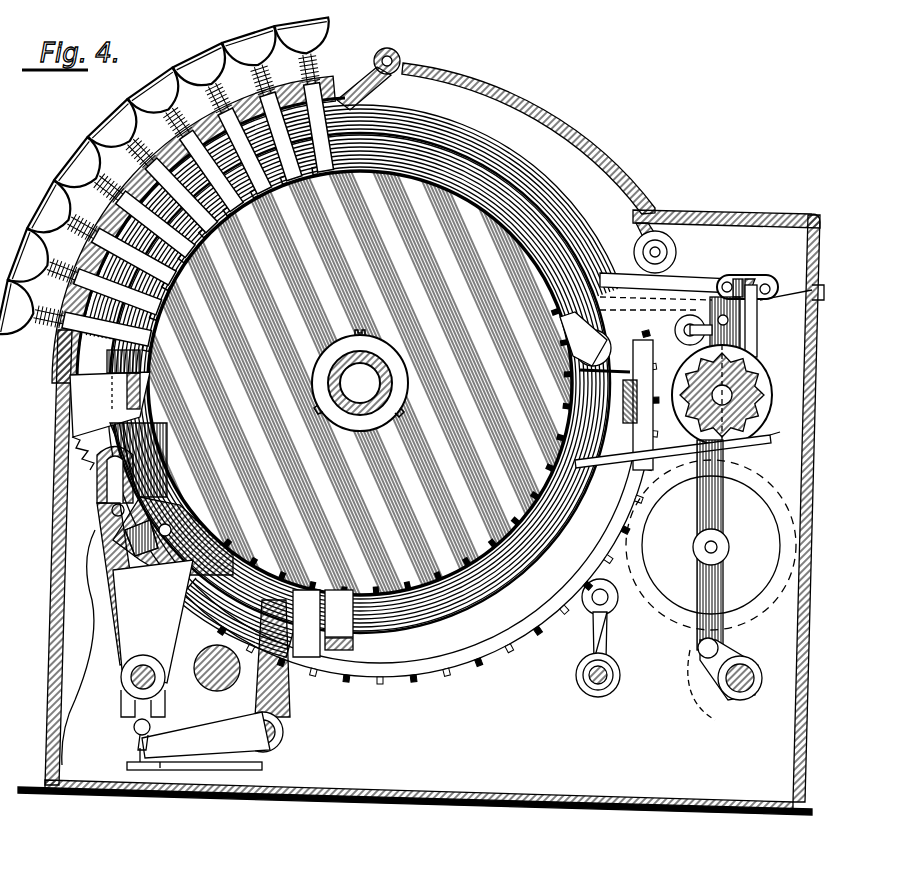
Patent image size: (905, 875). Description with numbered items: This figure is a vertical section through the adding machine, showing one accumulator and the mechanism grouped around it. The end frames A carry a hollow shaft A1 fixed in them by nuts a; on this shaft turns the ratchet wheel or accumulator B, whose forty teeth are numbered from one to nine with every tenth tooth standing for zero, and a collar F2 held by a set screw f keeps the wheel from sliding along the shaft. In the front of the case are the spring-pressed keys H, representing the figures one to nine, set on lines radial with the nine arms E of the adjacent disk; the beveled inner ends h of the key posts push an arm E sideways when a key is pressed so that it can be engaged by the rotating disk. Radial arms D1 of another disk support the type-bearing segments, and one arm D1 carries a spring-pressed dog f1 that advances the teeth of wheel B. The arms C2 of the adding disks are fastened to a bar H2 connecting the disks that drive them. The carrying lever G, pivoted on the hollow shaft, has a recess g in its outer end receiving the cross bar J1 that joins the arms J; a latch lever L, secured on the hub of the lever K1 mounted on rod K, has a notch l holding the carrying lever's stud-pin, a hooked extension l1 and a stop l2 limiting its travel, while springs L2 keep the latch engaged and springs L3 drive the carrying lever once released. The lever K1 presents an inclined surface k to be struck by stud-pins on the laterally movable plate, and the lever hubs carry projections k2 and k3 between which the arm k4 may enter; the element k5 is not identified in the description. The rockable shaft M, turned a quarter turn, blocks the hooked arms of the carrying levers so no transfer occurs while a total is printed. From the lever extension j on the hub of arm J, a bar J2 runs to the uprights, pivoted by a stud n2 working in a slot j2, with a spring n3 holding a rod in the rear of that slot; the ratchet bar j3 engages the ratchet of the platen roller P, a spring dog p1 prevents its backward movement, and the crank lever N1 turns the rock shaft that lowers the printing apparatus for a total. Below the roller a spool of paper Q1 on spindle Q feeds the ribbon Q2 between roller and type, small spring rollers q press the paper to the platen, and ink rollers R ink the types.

The end frames A is at (421, 512).
The ratchet wheel B is at (360, 383).
The hollow shaft A1 is at (392, 386).
The collar F2 is at (404, 363).
The set screw f is at (405, 411).
The inner ends of key posts h is at (100, 117).
The radially projecting arms E is at (338, 149).
The spring-pressed keys H is at (508, 570).
The bar H2 is at (353, 648).
The ink bearing rollers R is at (677, 246).
The nuts a is at (548, 597).
The arms J is at (110, 393).
The cross bar J1 is at (150, 555).
The bars J2 is at (700, 278).
The latch lever L is at (120, 584).
The springs L2 is at (104, 615).
The springs L3 is at (72, 447).
The notches l is at (110, 510).
The hooked extensions l1 is at (117, 475).
The stops l2 is at (138, 460).
The carrying lever G is at (173, 536).
The recesses g is at (250, 620).
The rod K is at (130, 682).
The lever K1 is at (153, 621).
The inclined surfaces k is at (212, 735).
The projection k2 is at (118, 712).
The projection k3 is at (166, 712).
The upwardly projecting arm k4 is at (134, 730).
The base plate k5 is at (190, 775).
The rockable shaft M is at (217, 691).
The arms D1 is at (633, 326).
The arm C2 is at (339, 613).
The spring pressed dog f1 is at (595, 341).
The studs n2 is at (730, 273).
The springs n3 is at (772, 283).
The slots j2 is at (752, 275).
The ratchet-bar j3 is at (778, 435).
The lever extension j is at (673, 451).
The paper ribbon Q2 is at (778, 308).
The spring dog p1 is at (758, 333).
The spring pressed rollers q is at (674, 329).
The platen roller P is at (762, 365).
The spool of paper Q1 is at (711, 545).
The spindle Q is at (730, 548).
The crank-lever N1 is at (722, 705).